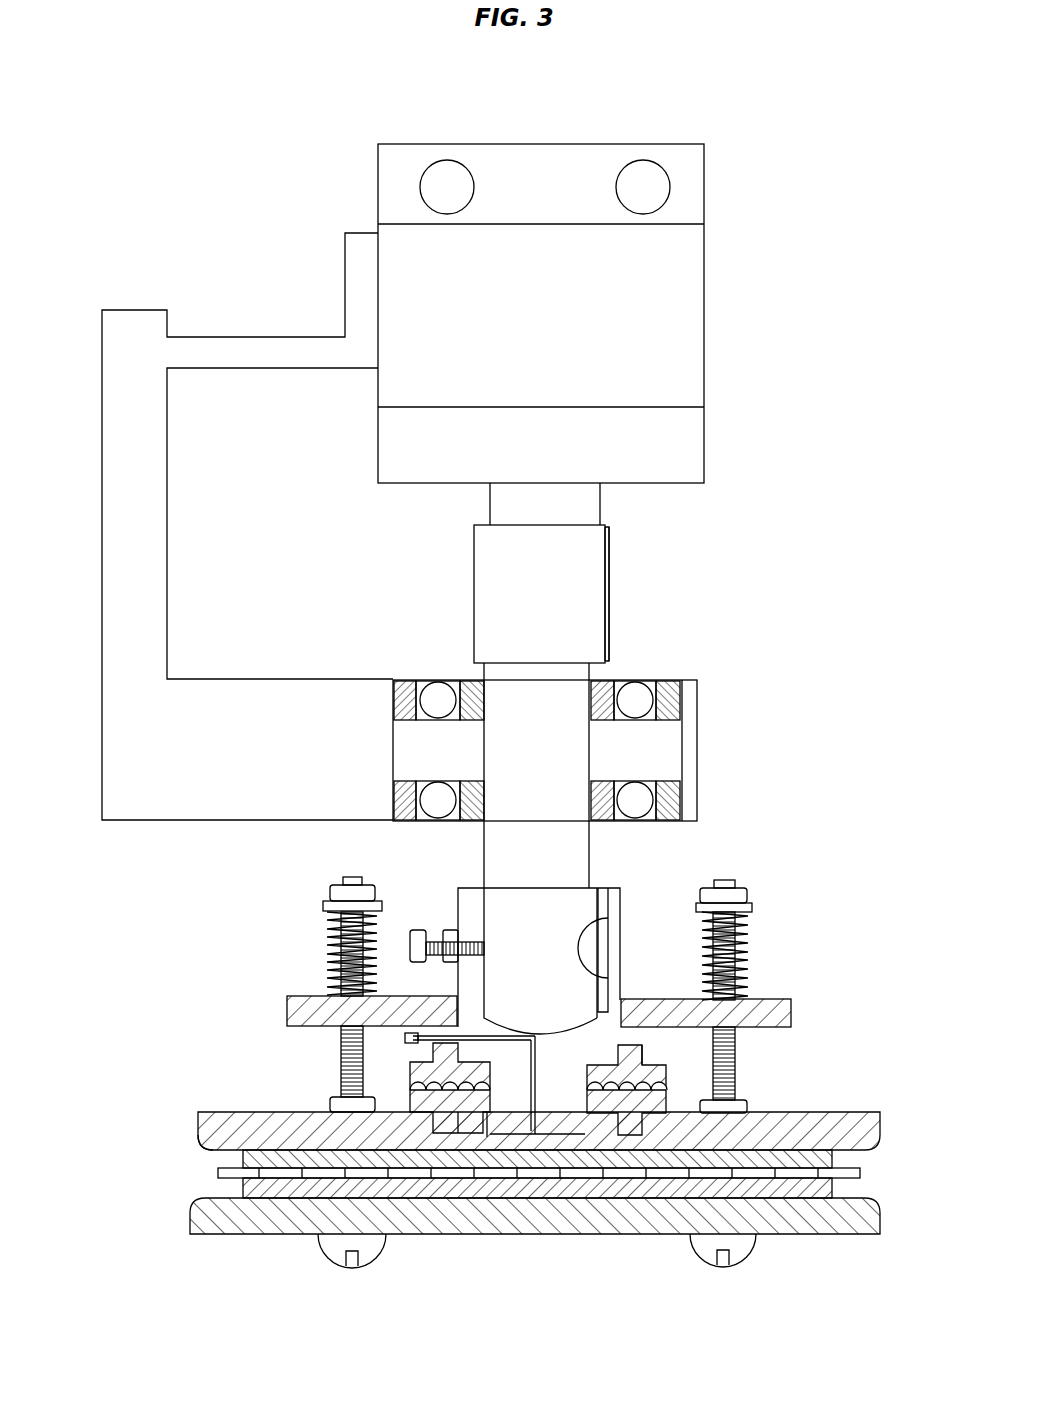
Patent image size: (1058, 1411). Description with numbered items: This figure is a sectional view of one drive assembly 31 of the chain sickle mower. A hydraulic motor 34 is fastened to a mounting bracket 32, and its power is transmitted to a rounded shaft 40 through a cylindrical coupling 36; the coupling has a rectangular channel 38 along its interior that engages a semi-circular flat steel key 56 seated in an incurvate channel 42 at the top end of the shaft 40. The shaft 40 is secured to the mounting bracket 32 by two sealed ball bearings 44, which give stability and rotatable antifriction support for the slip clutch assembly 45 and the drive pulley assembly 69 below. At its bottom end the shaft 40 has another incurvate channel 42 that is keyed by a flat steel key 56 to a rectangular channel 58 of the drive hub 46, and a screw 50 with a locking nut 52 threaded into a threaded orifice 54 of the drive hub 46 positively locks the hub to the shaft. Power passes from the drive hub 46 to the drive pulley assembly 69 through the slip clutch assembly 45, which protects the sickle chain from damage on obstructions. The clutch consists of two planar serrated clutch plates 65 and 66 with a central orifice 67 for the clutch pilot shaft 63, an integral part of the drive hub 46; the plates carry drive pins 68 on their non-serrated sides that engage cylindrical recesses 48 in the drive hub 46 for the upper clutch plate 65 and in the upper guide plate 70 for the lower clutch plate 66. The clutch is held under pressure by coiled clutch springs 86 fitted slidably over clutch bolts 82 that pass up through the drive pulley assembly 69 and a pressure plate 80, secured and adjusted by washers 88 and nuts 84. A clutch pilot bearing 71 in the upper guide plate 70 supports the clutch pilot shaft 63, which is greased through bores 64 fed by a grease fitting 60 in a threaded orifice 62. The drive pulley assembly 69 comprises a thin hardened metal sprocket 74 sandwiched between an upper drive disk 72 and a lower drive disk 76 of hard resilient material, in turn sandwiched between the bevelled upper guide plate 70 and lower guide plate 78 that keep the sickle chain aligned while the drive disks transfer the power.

The drive assembly 31 is at (719, 533).
The mounting bracket 32 is at (100, 422).
The hydraulic motor 34 is at (706, 310).
The cylindrical coupling 36 is at (474, 590).
The rectangular channel 38 is at (613, 578).
The rounded shaft 40 is at (481, 673).
The incurvate channel 42 is at (590, 640).
The sealed ball bearings 44 is at (670, 803).
The slip clutch assembly 45 is at (788, 1075).
The drive hub 46 is at (455, 978).
The cylindrical recesses 48 is at (617, 1056).
The screw 50 is at (419, 930).
The locking nut 52 is at (450, 930).
The threaded orifice 54 is at (472, 941).
The flat steel key 56 is at (592, 627).
The rectangular channel 58 is at (606, 903).
The grease fitting 60 is at (406, 1041).
The threaded orifice 62 is at (408, 1048).
The clutch pilot shaft 63 is at (507, 1115).
The bores 64 is at (538, 1108).
The upper clutch plate 65 is at (428, 1095).
The lower clutch plate 66 is at (467, 1103).
The central orifice 67 is at (590, 1094).
The drive pins 68 is at (646, 1058).
The drive pulley assembly 69 is at (878, 1184).
The upper guide plate 70 is at (882, 1122).
The clutch pilot bearing 71 is at (487, 1120).
The upper drive disk 72 is at (243, 1157).
The sprocket 74 is at (220, 1177).
The lower drive disk 76 is at (243, 1195).
The lower guide plate 78 is at (882, 1234).
The pressure plate 80 is at (792, 1012).
The clutch bolts 82 is at (748, 1258).
The nuts 84 is at (752, 892).
The coiled clutch springs 86 is at (745, 945).
The washers 88 is at (756, 905).